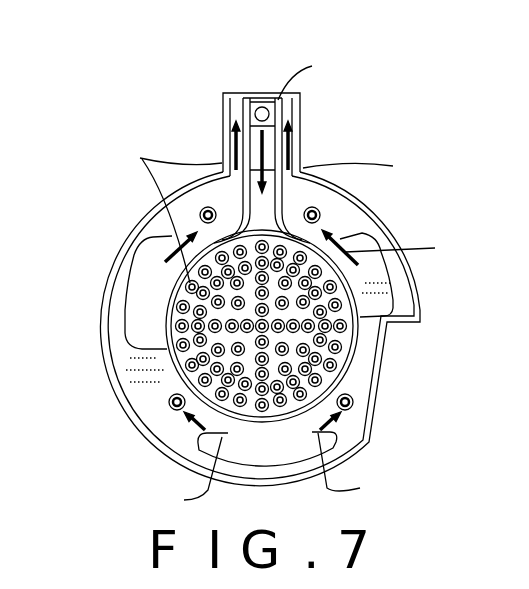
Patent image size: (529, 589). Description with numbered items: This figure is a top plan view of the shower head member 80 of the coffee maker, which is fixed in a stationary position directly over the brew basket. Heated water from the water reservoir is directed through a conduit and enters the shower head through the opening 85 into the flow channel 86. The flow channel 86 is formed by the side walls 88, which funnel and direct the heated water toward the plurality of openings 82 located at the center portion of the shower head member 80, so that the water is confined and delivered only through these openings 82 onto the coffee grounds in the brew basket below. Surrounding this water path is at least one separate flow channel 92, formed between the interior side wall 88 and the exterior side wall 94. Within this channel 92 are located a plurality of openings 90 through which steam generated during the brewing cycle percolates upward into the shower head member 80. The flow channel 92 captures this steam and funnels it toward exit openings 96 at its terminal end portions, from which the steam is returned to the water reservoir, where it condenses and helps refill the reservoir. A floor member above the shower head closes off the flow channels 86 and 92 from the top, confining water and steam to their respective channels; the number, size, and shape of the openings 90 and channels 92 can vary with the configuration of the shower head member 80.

The shower head member 80 is at (82, 366).
The openings 82 is at (362, 358).
The opening 85 is at (257, 98).
The flow channel 86 is at (323, 217).
The side walls 88 is at (227, 118).
The openings 90 is at (372, 289).
The flow channel 92 is at (233, 88).
The exterior side wall 94 is at (422, 309).
The exit openings 96 is at (236, 92).